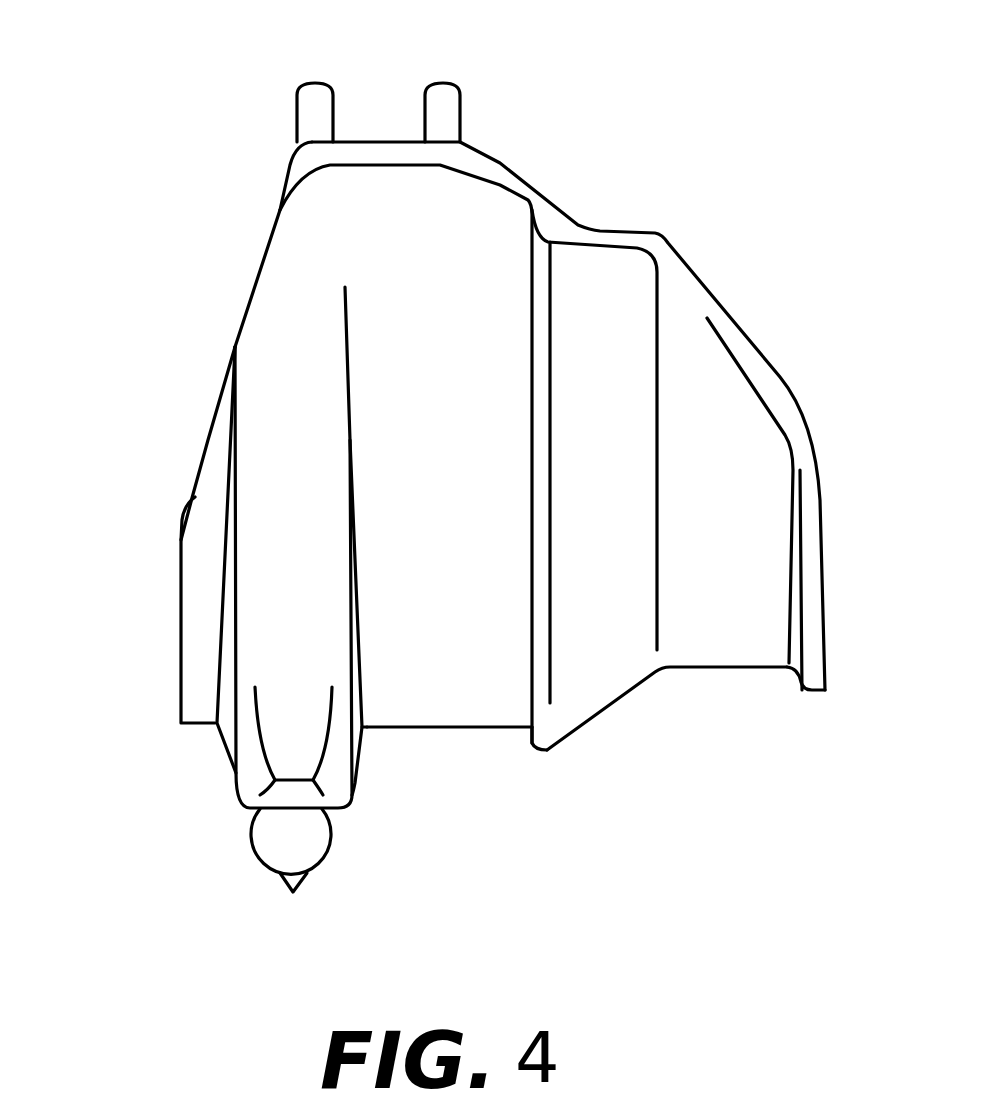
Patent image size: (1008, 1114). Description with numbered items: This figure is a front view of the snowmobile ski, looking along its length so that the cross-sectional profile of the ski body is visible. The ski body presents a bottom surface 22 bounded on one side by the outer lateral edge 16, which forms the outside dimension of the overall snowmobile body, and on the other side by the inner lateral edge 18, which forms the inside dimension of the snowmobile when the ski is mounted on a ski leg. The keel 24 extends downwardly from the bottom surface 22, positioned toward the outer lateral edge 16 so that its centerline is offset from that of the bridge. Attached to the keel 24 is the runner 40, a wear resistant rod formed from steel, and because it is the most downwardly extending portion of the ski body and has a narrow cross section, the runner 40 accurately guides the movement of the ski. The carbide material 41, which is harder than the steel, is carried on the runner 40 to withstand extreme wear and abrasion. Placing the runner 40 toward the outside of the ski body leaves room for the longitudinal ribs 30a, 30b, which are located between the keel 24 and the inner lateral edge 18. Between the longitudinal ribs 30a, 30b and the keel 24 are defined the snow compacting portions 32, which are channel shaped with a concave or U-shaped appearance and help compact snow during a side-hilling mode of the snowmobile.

The bottom surface 22 is at (443, 215).
The outer lateral edge 16 is at (182, 612).
The inner lateral edge 18 is at (830, 598).
The keel 24 is at (247, 785).
The runner 40 is at (270, 842).
The carbide material 41 is at (285, 888).
The snow compacting portions 32 is at (727, 677).
The longitudinal rib 30a is at (812, 695).
The longitudinal rib 30b is at (545, 753).